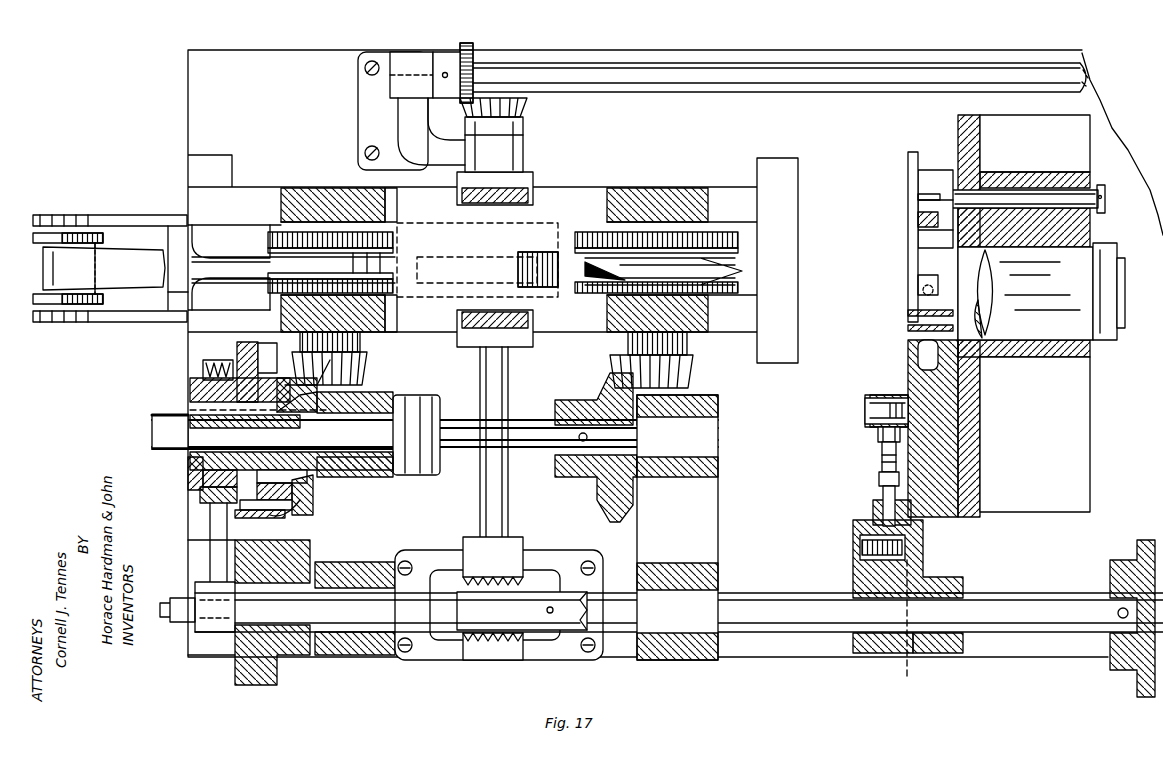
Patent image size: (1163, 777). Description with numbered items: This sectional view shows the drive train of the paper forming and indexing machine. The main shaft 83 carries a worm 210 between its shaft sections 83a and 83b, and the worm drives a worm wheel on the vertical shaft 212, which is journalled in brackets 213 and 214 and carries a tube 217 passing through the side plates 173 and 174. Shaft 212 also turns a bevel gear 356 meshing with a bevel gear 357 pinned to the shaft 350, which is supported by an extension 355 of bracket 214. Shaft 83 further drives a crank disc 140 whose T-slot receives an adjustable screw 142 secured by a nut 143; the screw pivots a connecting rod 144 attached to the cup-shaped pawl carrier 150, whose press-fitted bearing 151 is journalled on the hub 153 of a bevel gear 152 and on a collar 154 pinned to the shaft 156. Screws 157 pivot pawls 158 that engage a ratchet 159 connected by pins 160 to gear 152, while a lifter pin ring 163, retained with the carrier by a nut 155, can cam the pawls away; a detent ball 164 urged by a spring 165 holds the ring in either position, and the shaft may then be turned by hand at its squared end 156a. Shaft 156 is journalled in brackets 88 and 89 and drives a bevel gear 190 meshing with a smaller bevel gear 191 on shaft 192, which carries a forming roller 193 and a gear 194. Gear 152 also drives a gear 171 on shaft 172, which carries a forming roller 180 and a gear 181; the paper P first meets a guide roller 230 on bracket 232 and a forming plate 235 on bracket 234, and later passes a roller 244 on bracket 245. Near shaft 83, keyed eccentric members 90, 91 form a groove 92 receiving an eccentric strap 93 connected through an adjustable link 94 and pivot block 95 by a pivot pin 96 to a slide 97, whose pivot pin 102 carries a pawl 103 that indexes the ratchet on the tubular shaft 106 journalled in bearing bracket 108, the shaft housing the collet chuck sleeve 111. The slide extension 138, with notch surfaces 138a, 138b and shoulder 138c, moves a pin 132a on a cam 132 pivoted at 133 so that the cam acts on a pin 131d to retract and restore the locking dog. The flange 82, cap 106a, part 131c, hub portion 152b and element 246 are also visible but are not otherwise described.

The flange 82 is at (1143, 540).
The shaft 83 is at (1046, 633).
The shaft section 83a is at (777, 593).
The shaft section 83b is at (447, 590).
The bracket 88 is at (690, 660).
The bracket 89 is at (367, 658).
The main eccentric member 90 is at (920, 653).
The eccentric cap member 91 is at (862, 653).
The groove 92 is at (905, 556).
The eccentric strap 93 is at (873, 518).
The adjustable link 94 is at (882, 472).
The pivot block 95 is at (878, 436).
The pivot pin 96 is at (865, 406).
The slide 97 is at (908, 369).
The pivot pin 102 is at (908, 321).
The pawl 103 is at (918, 284).
The tubular shaft 106 is at (1090, 274).
The cylinder cap 106a is at (1108, 248).
The bearing bracket 108 is at (965, 115).
The collet chuck sleeve 111 is at (1124, 296).
The lever portion 131c is at (928, 232).
The pin 131d is at (918, 222).
The cam 132 is at (936, 170).
The pin 132a is at (918, 196).
The pivot 133 is at (1027, 190).
The extension 138 is at (913, 152).
The side surface 138a is at (908, 168).
The side surface 138b is at (910, 206).
The shoulder 138c is at (912, 234).
The crank disc 140 is at (262, 686).
The adjustable screw 142 is at (172, 617).
The nut 143 is at (195, 594).
The connecting rod 144 is at (210, 545).
The pawl carrier 150 is at (245, 355).
The bearing 151 is at (188, 472).
The bevel gear 152 is at (308, 502).
The hub 152b is at (303, 420).
The hub 153 is at (265, 455).
The collar 154 is at (222, 429).
The nut 155 is at (190, 388).
The shaft 156 is at (180, 450).
The squared end 156a is at (150, 432).
The screws 157 is at (288, 506).
The pawls 158 is at (283, 514).
The ratchet 159 is at (300, 495).
The pins 160 is at (310, 492).
The lifter pin ring 163 is at (200, 498).
The detent ball 164 is at (215, 363).
The spring 165 is at (208, 372).
The gear 171 is at (372, 364).
The shaft 172 is at (352, 178).
The plate 173 is at (398, 192).
The plate 174 is at (386, 327).
The forming roller 180 is at (397, 290).
The gear 181 is at (397, 240).
The bevel gear 190 is at (597, 374).
The bevel gear 191 is at (692, 368).
The shaft 192 is at (660, 181).
The forming roller 193 is at (738, 268).
The gear 194 is at (738, 240).
The worm 210 is at (490, 578).
The shaft 212 is at (480, 494).
The bracket 213 is at (554, 553).
The bearing bracket 214 is at (524, 156).
The tube 217 is at (495, 259).
The guide roller 230 is at (80, 232).
The bracket 232 is at (163, 215).
The bracket 234 is at (168, 294).
The forming plate 235 is at (215, 250).
The roller 244 is at (545, 250).
The bracket 245 is at (481, 226).
The taper key 246 is at (607, 284).
The shaft 350 is at (710, 63).
The extension 355 is at (405, 42).
The bevel gear 356 is at (527, 106).
The bevel gear 357 is at (467, 44).
The paper P is at (125, 250).